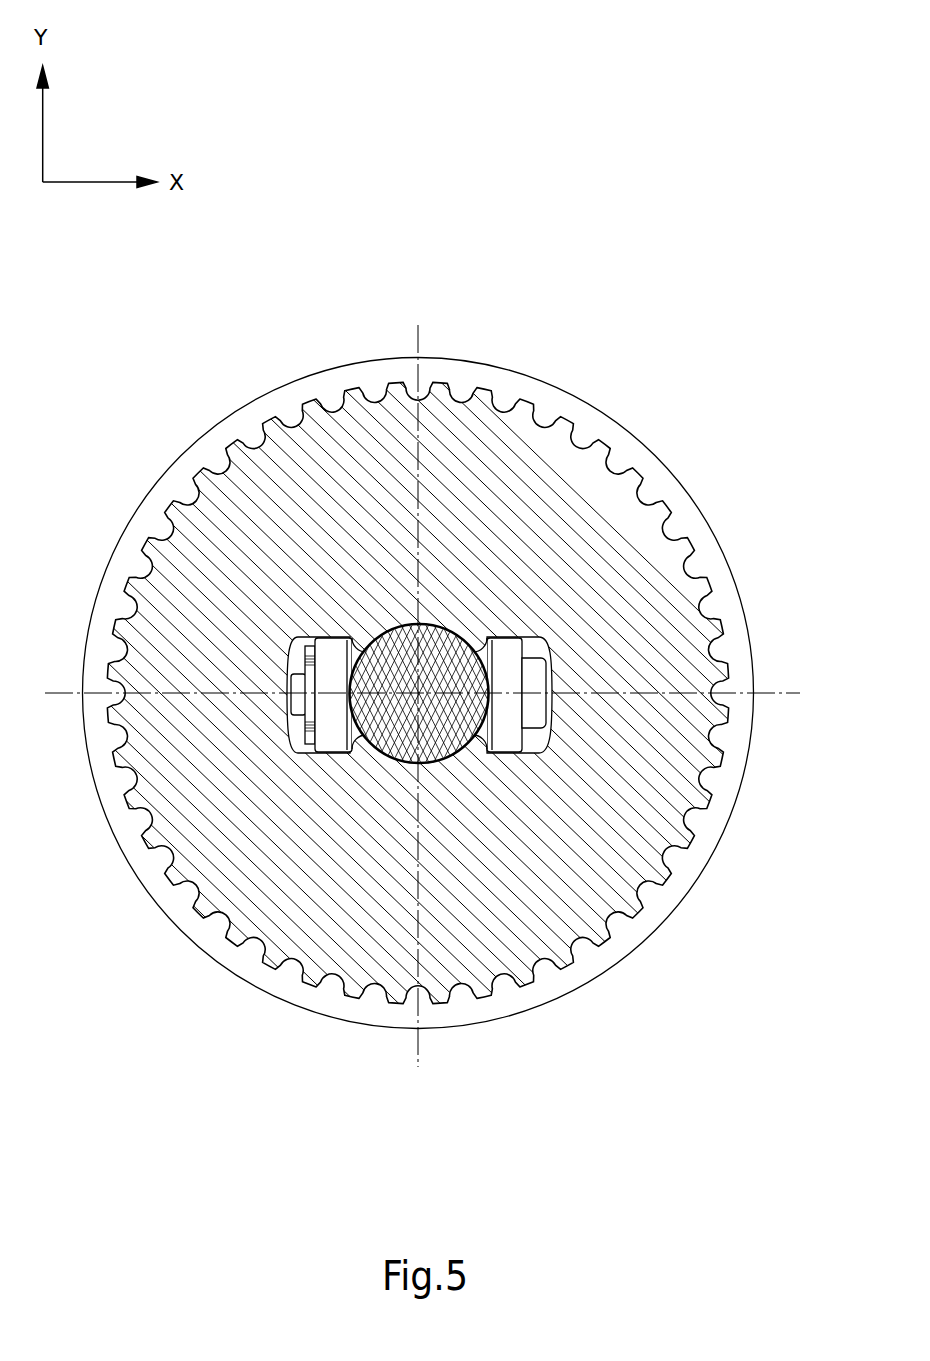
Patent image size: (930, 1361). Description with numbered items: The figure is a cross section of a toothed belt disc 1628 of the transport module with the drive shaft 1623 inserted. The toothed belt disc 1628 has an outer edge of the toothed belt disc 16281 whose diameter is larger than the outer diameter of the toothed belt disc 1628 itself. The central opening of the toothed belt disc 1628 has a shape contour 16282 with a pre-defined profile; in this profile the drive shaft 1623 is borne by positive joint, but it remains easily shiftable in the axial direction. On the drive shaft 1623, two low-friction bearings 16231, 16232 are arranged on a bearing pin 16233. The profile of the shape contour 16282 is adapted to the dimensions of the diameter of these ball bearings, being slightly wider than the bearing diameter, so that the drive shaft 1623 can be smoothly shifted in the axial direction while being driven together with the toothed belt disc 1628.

The drive shaft 1623 is at (431, 662).
The low-friction bearing 16231 is at (508, 663).
The low-friction bearing 16232 is at (332, 660).
The bearing pin 16233 is at (530, 682).
The toothed belt disc 1628 is at (590, 895).
The outer edge of the toothed belt disc 16281 is at (557, 985).
The shape contour 16282 is at (297, 730).